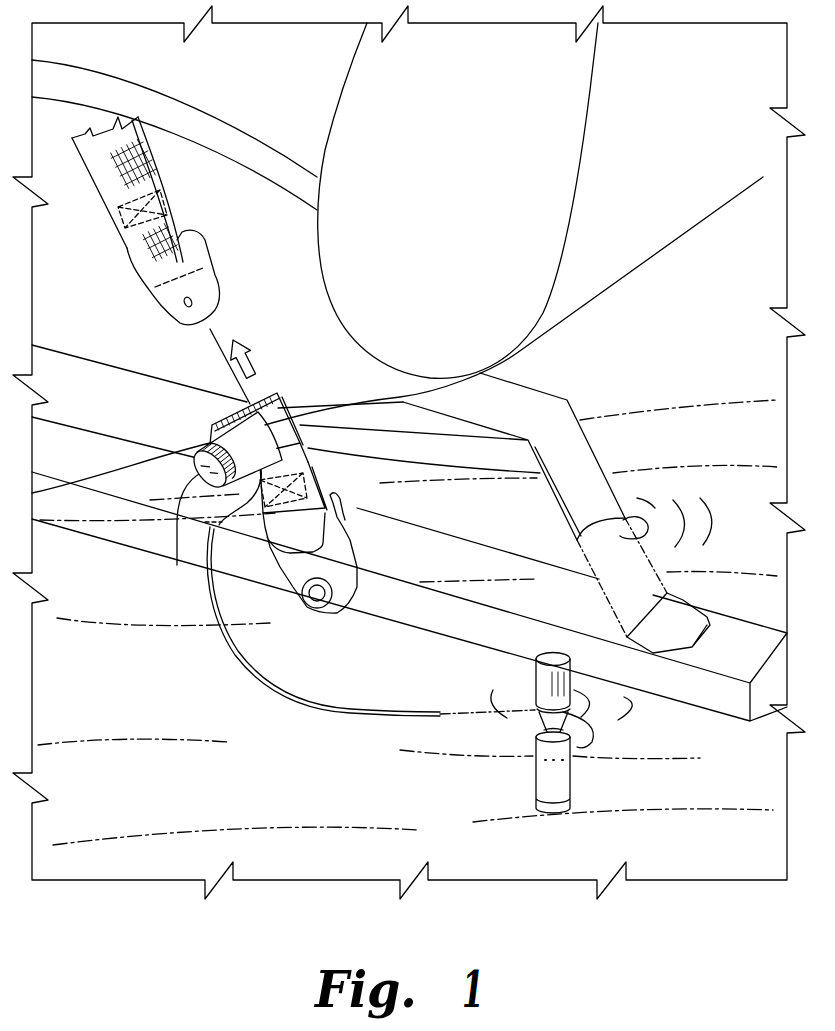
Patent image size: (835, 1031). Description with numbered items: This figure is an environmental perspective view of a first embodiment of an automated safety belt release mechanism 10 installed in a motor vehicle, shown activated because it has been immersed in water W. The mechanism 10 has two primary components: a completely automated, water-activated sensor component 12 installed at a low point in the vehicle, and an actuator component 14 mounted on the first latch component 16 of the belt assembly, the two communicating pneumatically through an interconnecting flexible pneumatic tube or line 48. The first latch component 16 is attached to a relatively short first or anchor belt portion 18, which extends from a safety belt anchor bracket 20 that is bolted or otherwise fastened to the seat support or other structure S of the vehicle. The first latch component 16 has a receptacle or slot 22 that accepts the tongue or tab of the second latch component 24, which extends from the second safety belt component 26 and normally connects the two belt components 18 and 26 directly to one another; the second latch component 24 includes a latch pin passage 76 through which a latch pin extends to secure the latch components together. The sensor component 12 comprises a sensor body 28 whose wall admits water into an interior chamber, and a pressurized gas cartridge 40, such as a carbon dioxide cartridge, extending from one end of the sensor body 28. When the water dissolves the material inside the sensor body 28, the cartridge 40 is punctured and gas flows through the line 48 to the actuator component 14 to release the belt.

The automated safety belt release mechanism 10 is at (142, 752).
The sensor component 12 is at (564, 751).
The actuator component 14 is at (177, 558).
The first latch component 16 is at (293, 417).
The first or anchor belt portion 18 is at (307, 452).
The safety belt anchor bracket 20 is at (350, 553).
The receptacle or slot 22 is at (266, 397).
The second latch component 24 is at (193, 233).
The second safety belt component 26 is at (103, 193).
The sensor body 28 is at (534, 771).
The pressurized gas cartridge 40 is at (536, 689).
The flexible pneumatic tube or line 48 is at (305, 700).
The latch pin passage 76 is at (176, 306).
The water W is at (682, 427).
The seat support or other structure S is at (460, 543).